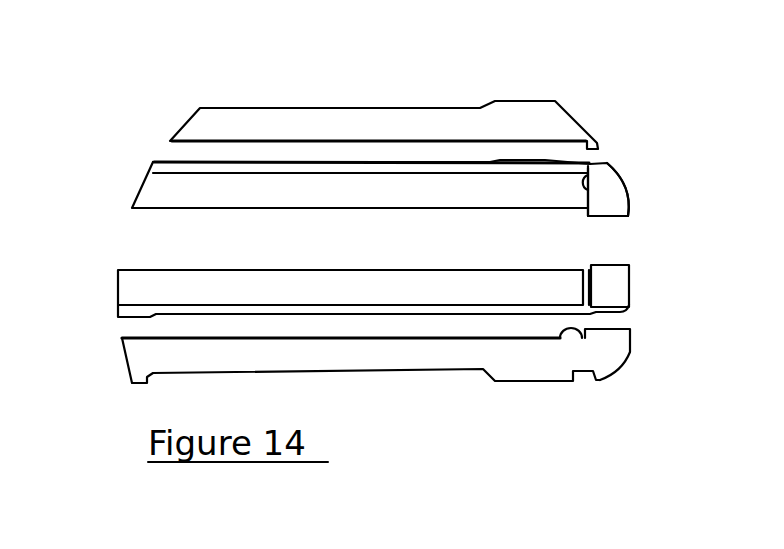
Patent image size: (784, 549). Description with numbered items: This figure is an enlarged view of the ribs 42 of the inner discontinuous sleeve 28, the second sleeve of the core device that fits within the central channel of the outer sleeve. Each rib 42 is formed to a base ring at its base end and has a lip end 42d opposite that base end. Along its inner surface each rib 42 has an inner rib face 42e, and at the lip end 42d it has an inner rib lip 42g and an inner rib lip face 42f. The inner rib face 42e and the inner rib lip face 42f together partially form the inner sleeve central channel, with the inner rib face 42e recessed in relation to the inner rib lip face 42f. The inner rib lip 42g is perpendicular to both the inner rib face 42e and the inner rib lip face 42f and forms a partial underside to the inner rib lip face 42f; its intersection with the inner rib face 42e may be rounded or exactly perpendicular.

The inner discontinuous sleeve 28 is at (343, 93).
The rib 42 is at (137, 358).
The lip end 42d is at (634, 288).
The inner rib face 42e is at (538, 195).
The inner rib lip face 42f is at (617, 186).
The inner rib lip 42g is at (606, 198).